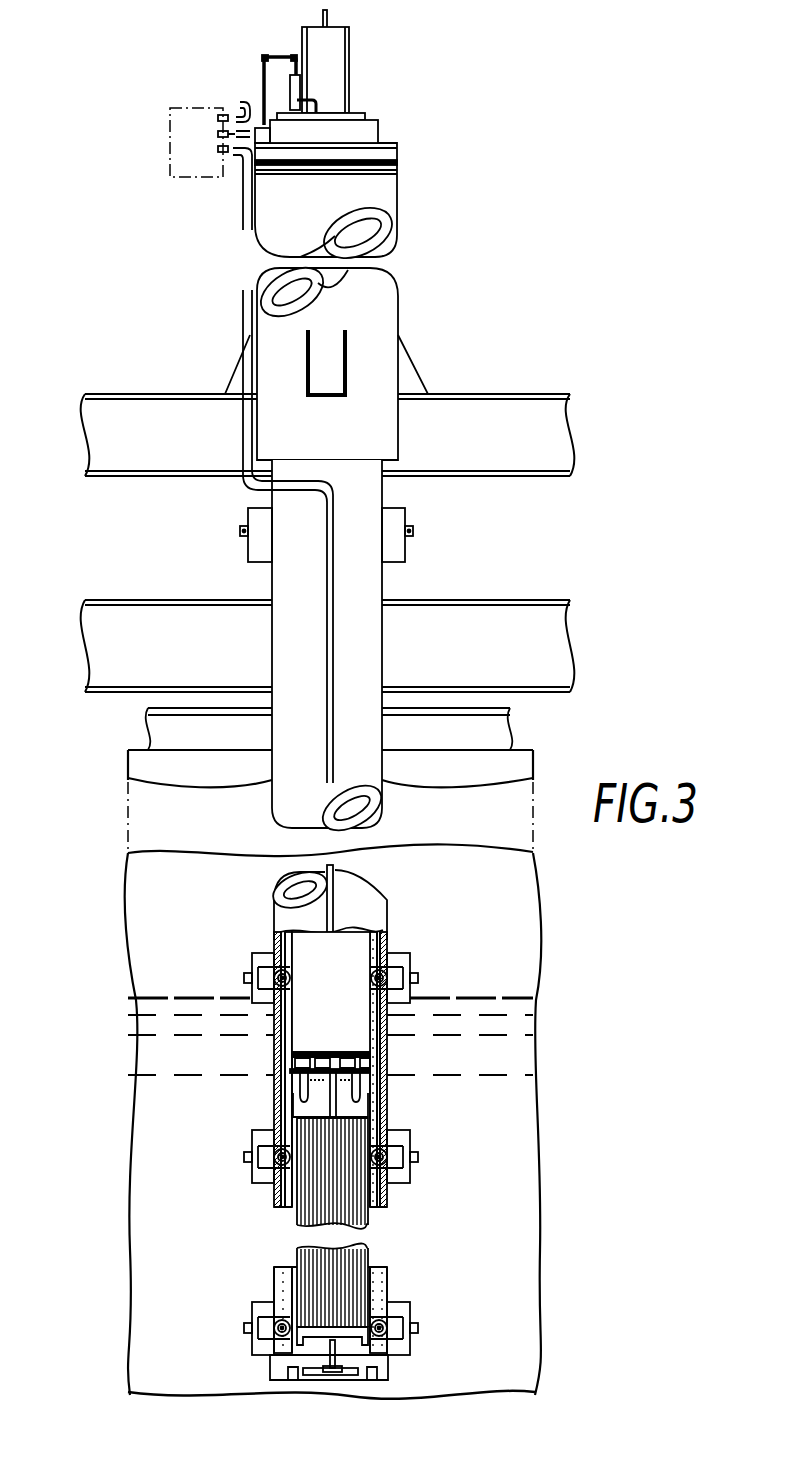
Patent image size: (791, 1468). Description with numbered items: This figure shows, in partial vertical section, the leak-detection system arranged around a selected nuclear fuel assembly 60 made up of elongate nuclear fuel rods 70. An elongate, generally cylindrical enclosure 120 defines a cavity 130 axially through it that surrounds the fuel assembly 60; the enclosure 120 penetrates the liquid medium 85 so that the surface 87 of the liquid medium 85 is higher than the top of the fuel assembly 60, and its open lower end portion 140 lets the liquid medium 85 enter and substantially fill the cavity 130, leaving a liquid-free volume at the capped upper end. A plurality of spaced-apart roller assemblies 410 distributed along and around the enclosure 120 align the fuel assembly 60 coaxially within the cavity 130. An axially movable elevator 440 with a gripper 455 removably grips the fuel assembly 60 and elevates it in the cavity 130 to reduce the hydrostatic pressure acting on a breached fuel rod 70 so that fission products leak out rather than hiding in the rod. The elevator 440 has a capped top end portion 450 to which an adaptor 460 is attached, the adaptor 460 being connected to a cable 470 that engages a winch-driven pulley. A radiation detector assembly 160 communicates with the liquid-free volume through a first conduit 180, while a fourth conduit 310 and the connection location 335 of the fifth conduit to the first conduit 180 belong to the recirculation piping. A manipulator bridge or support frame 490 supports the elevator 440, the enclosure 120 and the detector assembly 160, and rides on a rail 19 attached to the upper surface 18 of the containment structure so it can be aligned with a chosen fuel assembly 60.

The upper surface 18 is at (132, 746).
The rail 19 is at (146, 711).
The nuclear fuel assembly 60 is at (360, 1222).
The nuclear fuel rod 70 is at (368, 1252).
The liquid medium 85 is at (440, 1005).
The surface of liquid medium 87 is at (218, 997).
The enclosure 120 is at (278, 1192).
The cavity 130 is at (285, 1108).
The open lower end portion 140 is at (270, 1372).
The radiation detector assembly 160 is at (170, 148).
The first conduit 180 is at (222, 134).
The fourth conduit 310 is at (240, 100).
The location 335 is at (240, 300).
The roller assembly 410 is at (407, 517).
The elevator 440 is at (310, 965).
The capped top end portion 450 is at (365, 112).
The gripper 455 is at (300, 1082).
The adaptor 460 is at (350, 70).
The cable 470 is at (330, 19).
The support frame 490 is at (533, 262).